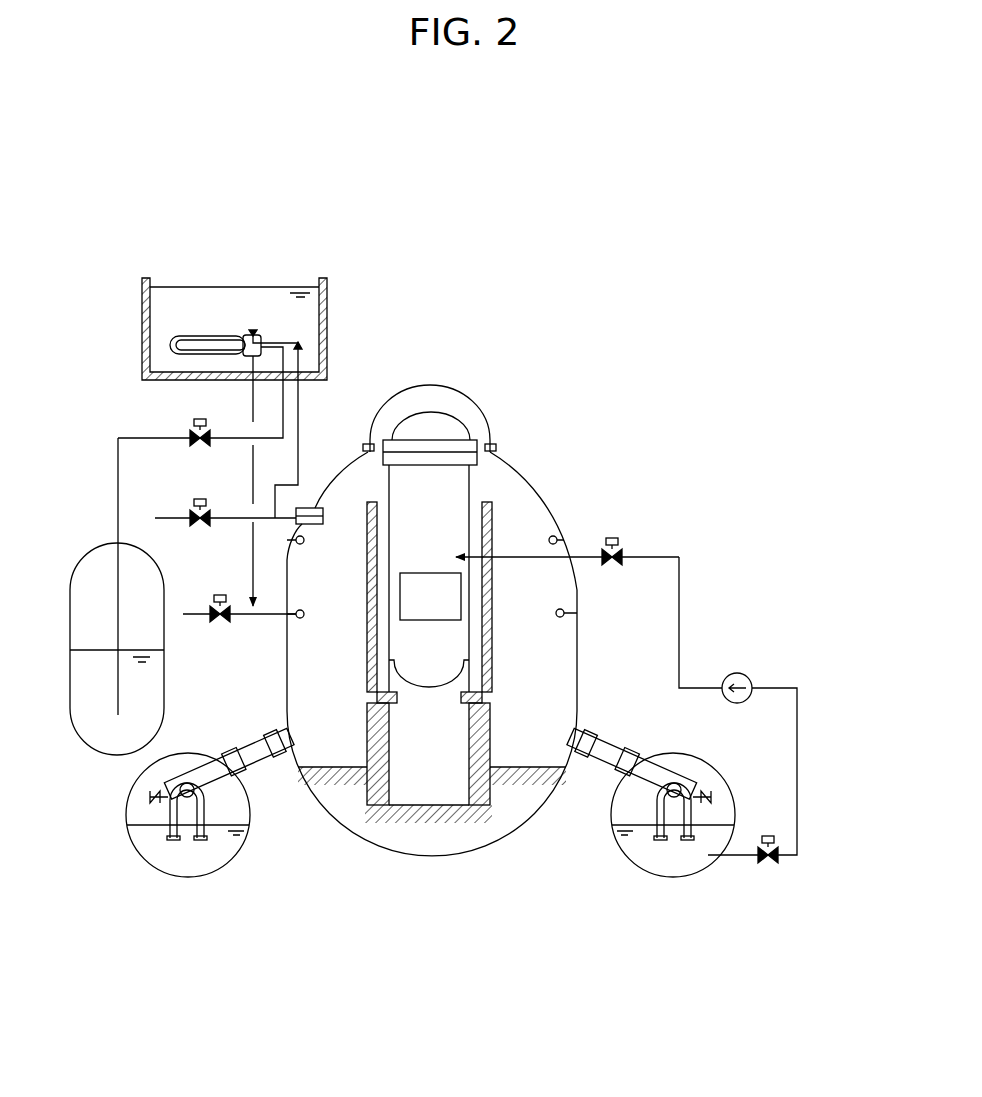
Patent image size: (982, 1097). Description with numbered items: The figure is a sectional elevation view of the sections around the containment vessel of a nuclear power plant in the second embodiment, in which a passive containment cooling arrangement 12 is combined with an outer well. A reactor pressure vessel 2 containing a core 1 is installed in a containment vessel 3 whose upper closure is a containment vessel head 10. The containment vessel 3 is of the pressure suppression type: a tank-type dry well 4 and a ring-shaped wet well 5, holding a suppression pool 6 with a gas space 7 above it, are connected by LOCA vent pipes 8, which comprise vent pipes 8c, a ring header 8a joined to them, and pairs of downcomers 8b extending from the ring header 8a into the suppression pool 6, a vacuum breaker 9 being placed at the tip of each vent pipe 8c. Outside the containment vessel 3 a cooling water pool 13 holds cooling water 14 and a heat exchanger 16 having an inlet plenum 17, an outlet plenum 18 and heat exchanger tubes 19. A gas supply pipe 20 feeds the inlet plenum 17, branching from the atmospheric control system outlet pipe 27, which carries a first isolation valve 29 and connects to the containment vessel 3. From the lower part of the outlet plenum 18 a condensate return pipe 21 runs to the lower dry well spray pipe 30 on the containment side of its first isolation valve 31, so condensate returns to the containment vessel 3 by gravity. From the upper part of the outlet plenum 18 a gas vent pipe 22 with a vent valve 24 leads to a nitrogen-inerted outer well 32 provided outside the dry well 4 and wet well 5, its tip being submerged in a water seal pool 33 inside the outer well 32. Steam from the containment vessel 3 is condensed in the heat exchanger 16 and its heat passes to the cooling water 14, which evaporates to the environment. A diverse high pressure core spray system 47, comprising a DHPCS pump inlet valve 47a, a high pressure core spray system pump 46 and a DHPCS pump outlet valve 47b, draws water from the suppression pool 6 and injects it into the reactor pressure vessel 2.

The core 1 is at (435, 565).
The reactor pressure vessel 2 is at (470, 493).
The containment vessel 3 is at (559, 503).
The dry well 4 is at (557, 665).
The wet well 5 is at (212, 897).
The suppression pool 6 is at (147, 837).
The wet well gas phase 7 is at (137, 812).
The LOCA vent pipes 8 is at (267, 786).
The ring header 8a is at (662, 775).
The downcomers 8b is at (213, 835).
The vent pipes 8c is at (650, 790).
The vacuum breaker 9 is at (713, 803).
The containment vessel head 10 is at (455, 400).
The passive containment cooling system 12 is at (122, 243).
The cooling water pool 13 is at (330, 302).
The cooling water 14 is at (270, 290).
The heat exchanger 16 is at (208, 303).
The inlet plenum 17 is at (252, 334).
The outlet plenum 18 is at (247, 362).
The heat exchanger tubes 19 is at (188, 335).
The gas supply pipe 20 is at (299, 413).
The condensate return pipe 21 is at (255, 563).
The gas vent pipe 22 is at (117, 477).
The vent valve 24 is at (198, 418).
The atmospheric control system outlet pipe 27 is at (243, 513).
The first isolation valve 29 is at (198, 500).
The lower dry well spray pipe 30 is at (243, 612).
The first isolation valve 31 is at (222, 622).
The outer well 32 is at (117, 542).
The water seal pool 33 is at (105, 740).
The high pressure core spray system pump 46 is at (741, 673).
The diverse high pressure core spray system 47 is at (737, 612).
The DHPCS pump inlet valve 47a is at (770, 864).
The DHPCS pump outlet valve 47b is at (625, 540).